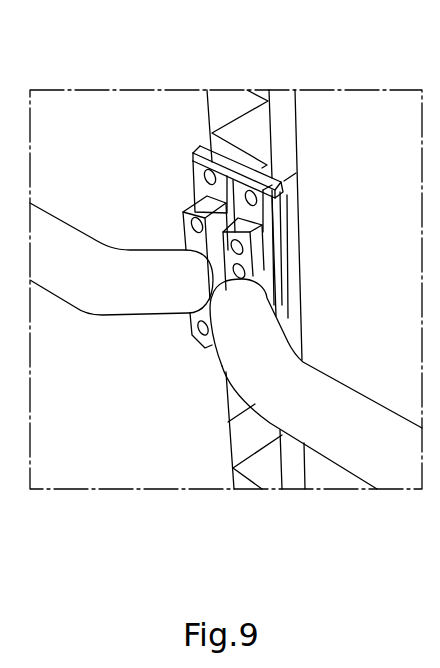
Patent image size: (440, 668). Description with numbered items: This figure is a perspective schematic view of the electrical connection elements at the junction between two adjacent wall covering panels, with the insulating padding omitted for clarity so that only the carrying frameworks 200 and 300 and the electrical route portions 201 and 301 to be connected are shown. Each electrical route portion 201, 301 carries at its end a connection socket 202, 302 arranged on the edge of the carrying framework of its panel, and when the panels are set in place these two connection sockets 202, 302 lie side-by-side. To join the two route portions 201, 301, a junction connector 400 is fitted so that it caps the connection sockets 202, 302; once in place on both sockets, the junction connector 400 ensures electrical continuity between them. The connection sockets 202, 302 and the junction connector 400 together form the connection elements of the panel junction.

The carrying framework 200 is at (100, 457).
The electrical route portion 201 is at (62, 283).
The connection socket 202 is at (185, 212).
The carrying framework 300 is at (381, 360).
The electrical route portion 301 is at (288, 447).
The connection socket 302 is at (256, 241).
The junction connector 400 is at (258, 186).